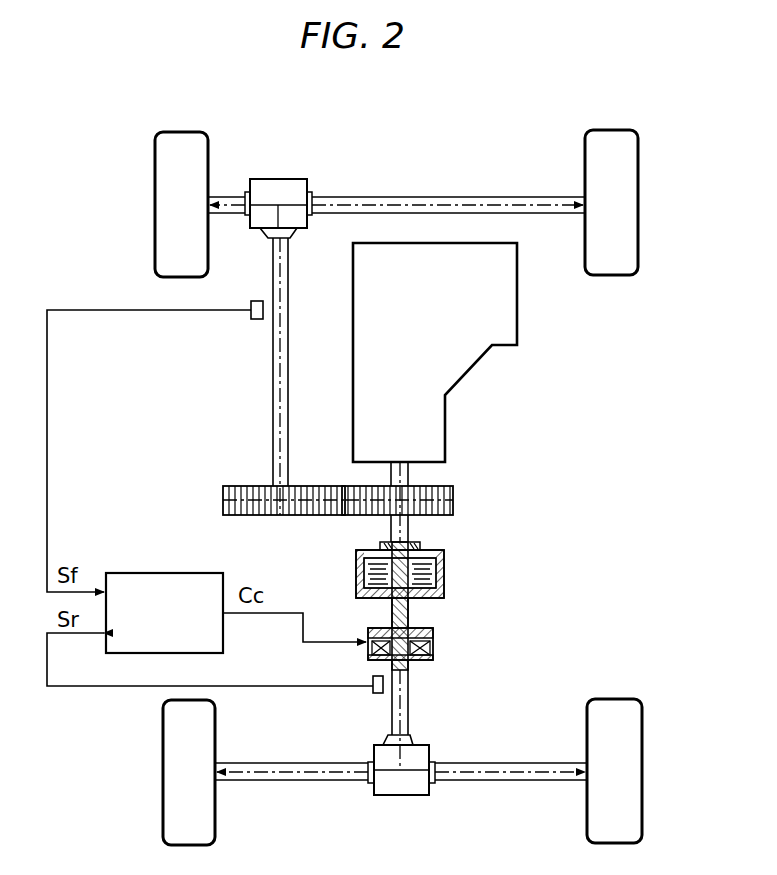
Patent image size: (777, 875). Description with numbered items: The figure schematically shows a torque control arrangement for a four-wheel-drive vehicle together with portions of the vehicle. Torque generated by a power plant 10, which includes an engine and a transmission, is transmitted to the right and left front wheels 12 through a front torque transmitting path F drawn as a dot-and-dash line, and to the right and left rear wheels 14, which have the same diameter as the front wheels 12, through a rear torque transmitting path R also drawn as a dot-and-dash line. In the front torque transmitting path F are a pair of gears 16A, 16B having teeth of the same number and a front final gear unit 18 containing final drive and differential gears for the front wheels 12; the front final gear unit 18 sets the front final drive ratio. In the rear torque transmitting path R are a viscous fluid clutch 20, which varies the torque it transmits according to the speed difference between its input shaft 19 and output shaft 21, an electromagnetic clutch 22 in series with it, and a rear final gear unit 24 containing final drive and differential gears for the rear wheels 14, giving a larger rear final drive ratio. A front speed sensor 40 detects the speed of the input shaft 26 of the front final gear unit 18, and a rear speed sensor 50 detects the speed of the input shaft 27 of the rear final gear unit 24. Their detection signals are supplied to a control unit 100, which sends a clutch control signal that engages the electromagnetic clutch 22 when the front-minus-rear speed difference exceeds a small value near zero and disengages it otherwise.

The power plant 10 is at (473, 367).
The front wheels 12 is at (155, 157).
The rear wheels 14 is at (163, 827).
The gear 16A is at (453, 495).
The gear 16B is at (223, 500).
The front final gear unit 18 is at (297, 179).
The input shaft 19 is at (408, 520).
The viscous fluid clutch 20 is at (444, 570).
The output shaft 21 is at (408, 613).
The electromagnetic clutch 22 is at (433, 648).
The rear final gear unit 24 is at (407, 795).
The input shaft 26 is at (273, 408).
The input shaft 27 is at (408, 697).
The front speed sensor 40 is at (257, 320).
The rear speed sensor 50 is at (376, 694).
The control unit 100 is at (158, 573).
The front torque transmitting path F is at (288, 352).
The rear torque transmitting path R is at (497, 770).